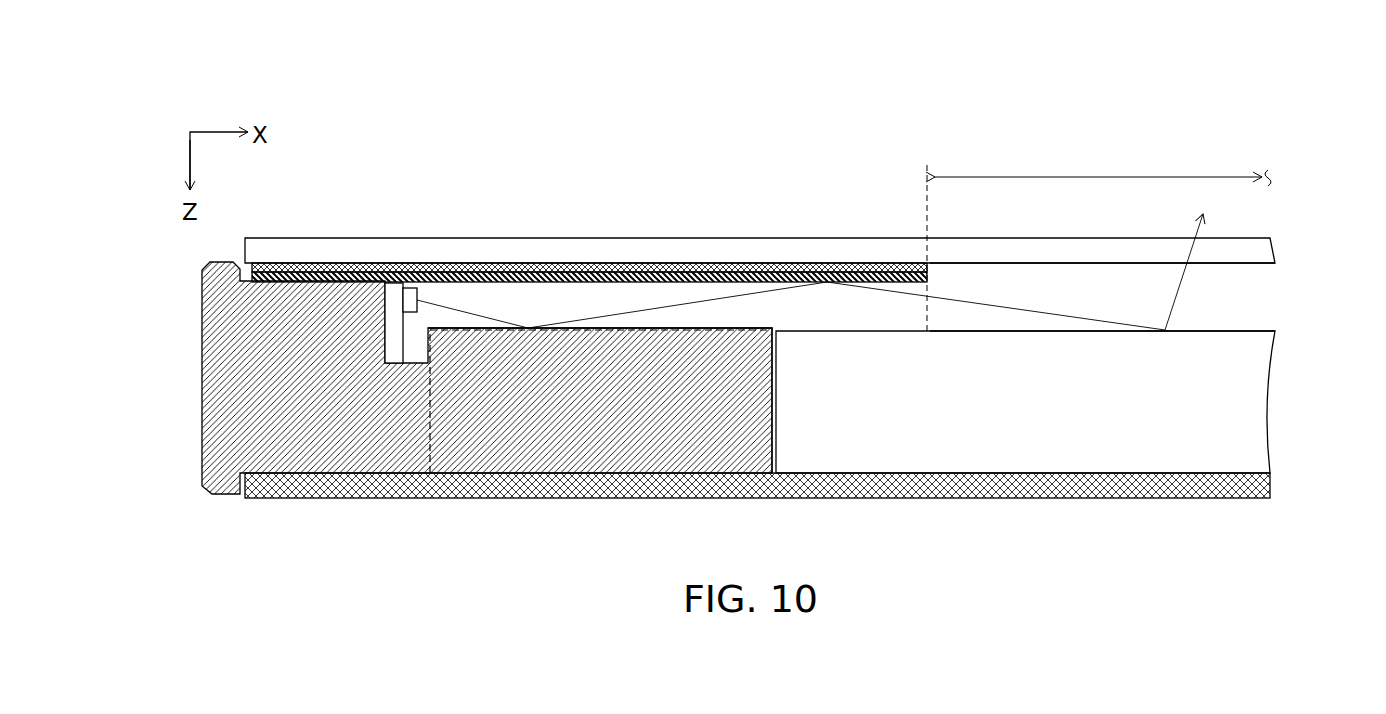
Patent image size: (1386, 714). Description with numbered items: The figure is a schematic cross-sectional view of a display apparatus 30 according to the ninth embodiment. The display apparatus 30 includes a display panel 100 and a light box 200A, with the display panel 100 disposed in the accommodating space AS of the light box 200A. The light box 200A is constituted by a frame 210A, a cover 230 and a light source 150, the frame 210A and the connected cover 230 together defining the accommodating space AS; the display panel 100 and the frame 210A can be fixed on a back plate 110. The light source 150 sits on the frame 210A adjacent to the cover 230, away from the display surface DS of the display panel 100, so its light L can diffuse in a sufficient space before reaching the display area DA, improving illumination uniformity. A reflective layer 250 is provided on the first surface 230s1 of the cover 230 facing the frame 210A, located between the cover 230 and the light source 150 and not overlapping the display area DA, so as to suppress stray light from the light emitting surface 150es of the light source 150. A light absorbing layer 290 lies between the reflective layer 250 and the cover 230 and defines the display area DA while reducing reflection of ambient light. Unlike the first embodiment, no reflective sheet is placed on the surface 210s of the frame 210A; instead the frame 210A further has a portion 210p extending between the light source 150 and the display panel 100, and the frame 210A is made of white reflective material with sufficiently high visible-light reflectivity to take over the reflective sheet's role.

The display apparatus 30 is at (1378, 549).
The light box 200A is at (898, 27).
The frame 210A is at (218, 358).
The portion 210p is at (600, 435).
The surface 210s is at (588, 326).
The cover 230 is at (1258, 247).
The first surface 230s1 is at (1228, 266).
The light source 150 is at (405, 288).
The light emitting surface 150es is at (420, 293).
The reflective layer 250 is at (728, 276).
The light absorbing layer 290 is at (660, 266).
The display panel 100 is at (1237, 408).
The back plate 110 is at (1263, 487).
The display surface DS is at (1223, 328).
The accommodating space AS is at (1030, 288).
The display area DA is at (1103, 166).
The light L is at (1172, 300).